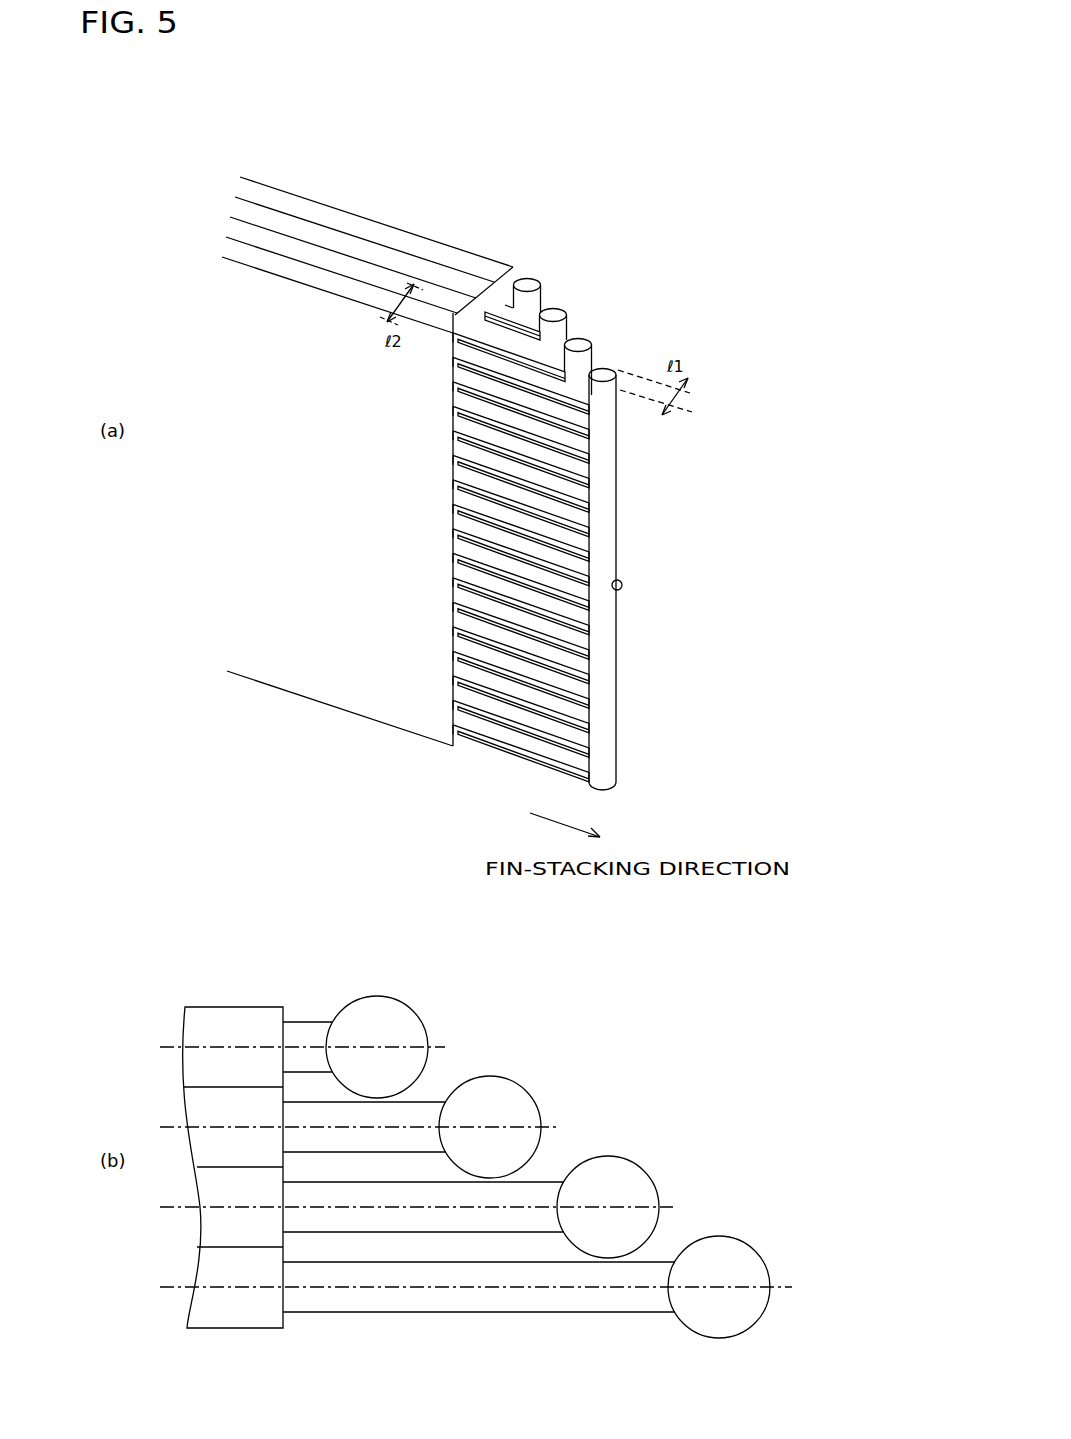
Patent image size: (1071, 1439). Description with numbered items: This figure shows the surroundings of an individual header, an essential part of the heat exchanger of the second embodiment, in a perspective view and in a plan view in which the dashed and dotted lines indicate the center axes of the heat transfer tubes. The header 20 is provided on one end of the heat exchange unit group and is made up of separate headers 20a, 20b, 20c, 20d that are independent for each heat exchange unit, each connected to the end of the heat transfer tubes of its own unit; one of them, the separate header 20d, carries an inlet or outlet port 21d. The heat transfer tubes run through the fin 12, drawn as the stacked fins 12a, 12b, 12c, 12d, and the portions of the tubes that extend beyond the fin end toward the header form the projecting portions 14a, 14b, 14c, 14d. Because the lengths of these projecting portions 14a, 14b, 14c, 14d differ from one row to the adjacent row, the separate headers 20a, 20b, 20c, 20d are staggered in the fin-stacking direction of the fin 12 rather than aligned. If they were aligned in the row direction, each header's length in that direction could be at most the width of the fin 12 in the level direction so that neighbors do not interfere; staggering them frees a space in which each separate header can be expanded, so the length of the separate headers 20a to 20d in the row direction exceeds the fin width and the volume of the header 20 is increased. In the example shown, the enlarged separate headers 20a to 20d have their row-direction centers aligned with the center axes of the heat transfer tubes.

The fin 12 is at (217, 1020).
The fin 12a is at (302, 210).
The fin 12b is at (323, 237).
The fin 12c is at (347, 263).
The fin 12d is at (367, 293).
The projecting portion 14a is at (490, 278).
The projecting portion 14b is at (485, 305).
The projecting portion 14c is at (490, 330).
The projecting portion 14d is at (495, 372).
The header 20 is at (566, 203).
The separate header 20a is at (530, 283).
The separate header 20b is at (556, 318).
The separate header 20c is at (580, 345).
The separate header 20d is at (604, 373).
The inlet or outlet port 21d is at (623, 582).